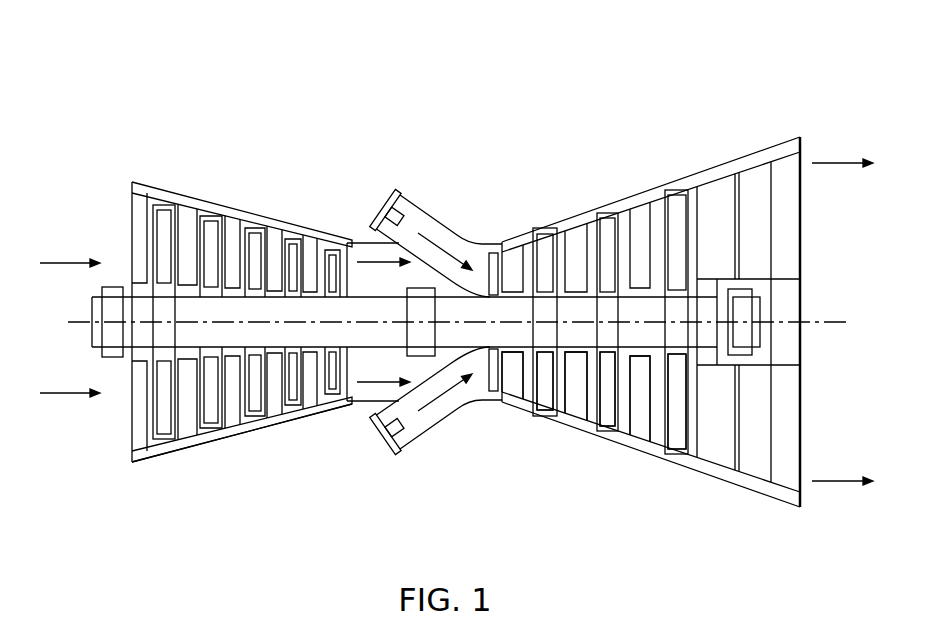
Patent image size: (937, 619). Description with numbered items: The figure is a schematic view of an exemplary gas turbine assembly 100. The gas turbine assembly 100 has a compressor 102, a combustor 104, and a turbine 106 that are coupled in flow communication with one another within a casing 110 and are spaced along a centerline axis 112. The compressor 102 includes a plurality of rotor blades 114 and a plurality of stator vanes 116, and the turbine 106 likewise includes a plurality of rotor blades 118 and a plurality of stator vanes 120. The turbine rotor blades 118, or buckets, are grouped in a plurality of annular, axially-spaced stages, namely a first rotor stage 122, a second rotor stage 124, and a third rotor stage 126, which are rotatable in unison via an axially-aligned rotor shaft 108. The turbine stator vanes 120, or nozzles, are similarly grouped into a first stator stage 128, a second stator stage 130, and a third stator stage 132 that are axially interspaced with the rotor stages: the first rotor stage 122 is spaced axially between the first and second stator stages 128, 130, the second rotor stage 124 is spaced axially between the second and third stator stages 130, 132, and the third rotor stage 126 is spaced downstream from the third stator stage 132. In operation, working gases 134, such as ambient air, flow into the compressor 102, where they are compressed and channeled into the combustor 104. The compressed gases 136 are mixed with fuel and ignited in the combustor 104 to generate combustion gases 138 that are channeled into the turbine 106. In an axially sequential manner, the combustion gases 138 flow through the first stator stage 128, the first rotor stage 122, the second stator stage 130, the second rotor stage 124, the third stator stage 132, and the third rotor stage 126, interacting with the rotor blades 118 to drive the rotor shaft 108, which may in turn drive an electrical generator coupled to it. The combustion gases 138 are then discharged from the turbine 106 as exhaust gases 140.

The gas turbine assembly 100 is at (742, 66).
The compressor 102 is at (257, 193).
The combustor 104 is at (437, 204).
The turbine 106 is at (645, 182).
The rotor shaft 108 is at (745, 289).
The casing 110 is at (200, 444).
The centerline axis 112 is at (810, 320).
The rotor blades 114 is at (162, 212).
The stator vanes 116 is at (188, 216).
The rotor blades 118 is at (546, 252).
The stator vanes 120 is at (578, 236).
The first rotor stage 122 is at (541, 429).
The second rotor stage 124 is at (602, 454).
The third rotor stage 126 is at (676, 484).
The first stator stage 128 is at (508, 421).
The second stator stage 130 is at (574, 441).
The third stator stage 132 is at (633, 464).
The working gases 134 is at (66, 258).
The compressed gases 136 is at (372, 258).
The combustion gases 138 is at (448, 242).
The exhaust gases 140 is at (842, 160).